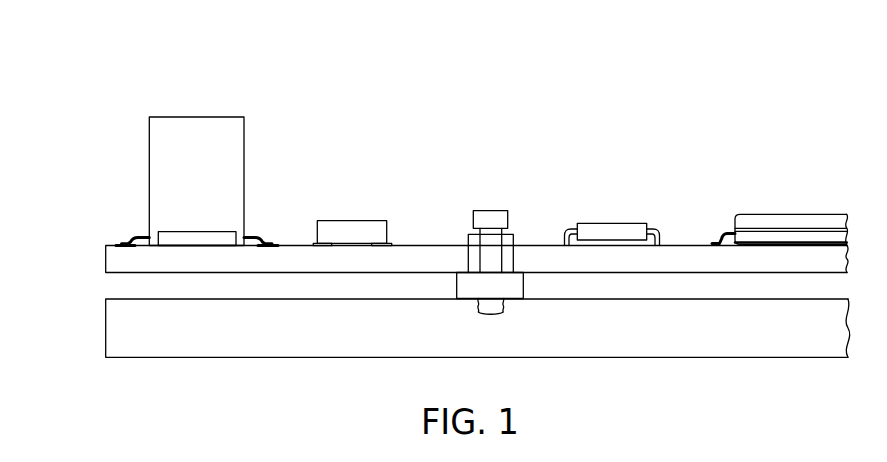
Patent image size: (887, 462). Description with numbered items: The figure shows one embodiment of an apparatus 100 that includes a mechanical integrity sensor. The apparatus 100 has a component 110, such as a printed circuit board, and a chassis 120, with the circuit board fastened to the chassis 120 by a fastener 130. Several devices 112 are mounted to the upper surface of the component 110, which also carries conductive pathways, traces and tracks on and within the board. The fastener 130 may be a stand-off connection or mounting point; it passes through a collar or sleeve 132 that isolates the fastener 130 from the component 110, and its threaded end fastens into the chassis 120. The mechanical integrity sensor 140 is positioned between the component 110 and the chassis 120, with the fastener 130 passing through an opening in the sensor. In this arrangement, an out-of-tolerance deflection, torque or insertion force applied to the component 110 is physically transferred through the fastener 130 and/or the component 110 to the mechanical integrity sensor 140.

The apparatus 100 is at (114, 49).
The component 110 is at (106, 258).
The devices 112 is at (343, 221).
The chassis 120 is at (106, 326).
The fastener 130 is at (490, 216).
The collar or sleeve 132 is at (508, 242).
The mechanical integrity sensor 140 is at (457, 286).